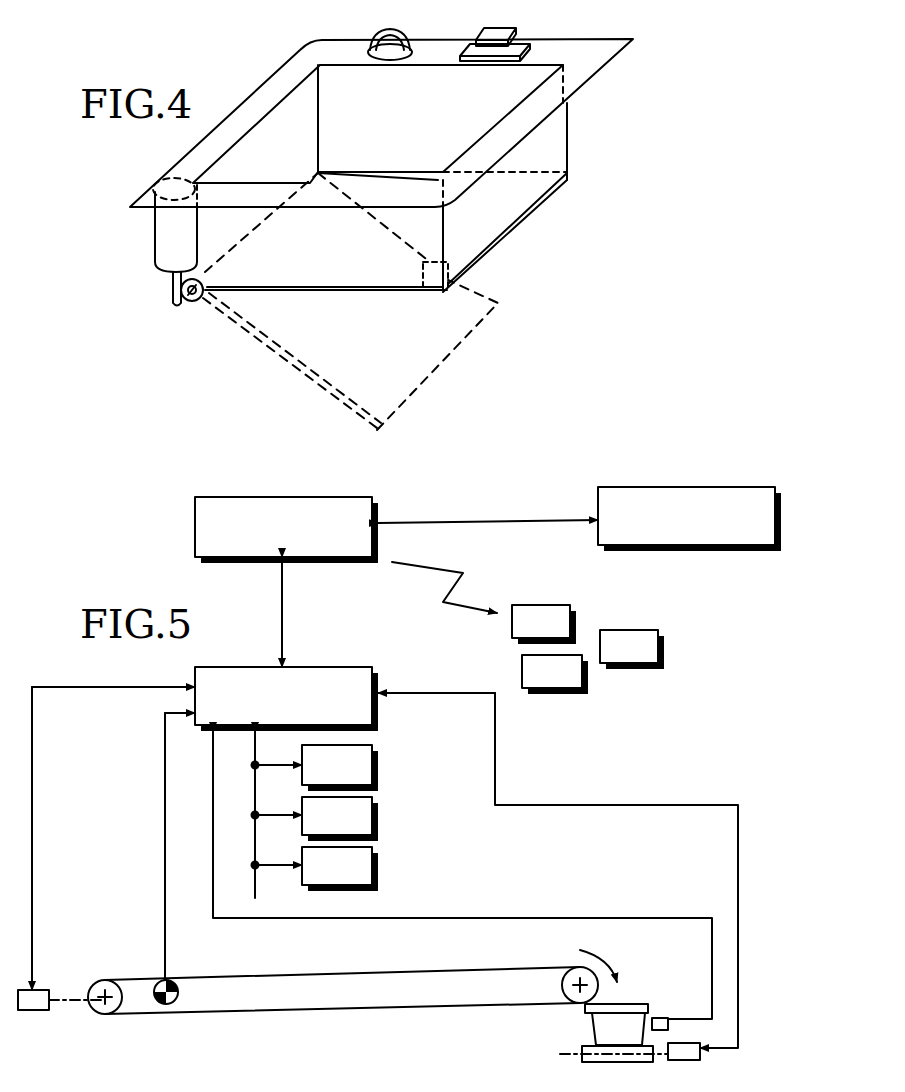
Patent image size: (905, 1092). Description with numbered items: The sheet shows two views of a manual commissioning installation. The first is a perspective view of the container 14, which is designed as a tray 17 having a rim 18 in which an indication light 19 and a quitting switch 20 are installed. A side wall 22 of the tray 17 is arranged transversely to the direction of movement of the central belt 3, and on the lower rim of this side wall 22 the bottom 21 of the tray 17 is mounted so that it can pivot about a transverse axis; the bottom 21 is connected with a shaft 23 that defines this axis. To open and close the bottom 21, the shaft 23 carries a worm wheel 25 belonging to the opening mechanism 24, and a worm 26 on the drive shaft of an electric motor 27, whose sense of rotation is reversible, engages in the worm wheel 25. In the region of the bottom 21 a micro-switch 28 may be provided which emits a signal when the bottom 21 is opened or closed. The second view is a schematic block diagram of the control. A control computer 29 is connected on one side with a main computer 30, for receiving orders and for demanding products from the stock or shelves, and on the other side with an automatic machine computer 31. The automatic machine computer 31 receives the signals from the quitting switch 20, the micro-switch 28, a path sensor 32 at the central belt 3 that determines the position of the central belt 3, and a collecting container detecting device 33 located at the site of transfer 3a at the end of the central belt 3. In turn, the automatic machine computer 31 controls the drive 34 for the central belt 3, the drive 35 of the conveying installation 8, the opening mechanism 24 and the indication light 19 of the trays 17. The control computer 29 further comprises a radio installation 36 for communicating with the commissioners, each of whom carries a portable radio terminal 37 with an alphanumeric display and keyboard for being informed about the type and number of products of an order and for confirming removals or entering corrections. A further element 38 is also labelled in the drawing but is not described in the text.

In FIG. 5, the central belt 3 is at (445, 1005).
In FIG. 5, the site of transfer 3a is at (578, 1010).
In FIG. 5, the conveying installation 8 is at (578, 1058).
In FIG. 4, the container 14 is at (236, 96).
In FIG. 5, the container 14 is at (351, 908).
In FIG. 4, the tray 17 is at (282, 72).
In FIG. 4, the rim 18 is at (578, 77).
In FIG. 4, the indication light 19 is at (385, 42).
In FIG. 5, the indication light 19 is at (340, 768).
In FIG. 4, the quitting switch 20 is at (498, 33).
In FIG. 5, the quitting switch 20 is at (340, 819).
In FIG. 4, the bottom 21 is at (520, 218).
In FIG. 4, the side wall 22 is at (236, 155).
In FIG. 4, the shaft 23 is at (260, 226).
In FIG. 4, the opening mechanism 24 is at (136, 328).
In FIG. 5, the opening mechanism 24 is at (340, 869).
In FIG. 4, the worm wheel 25 is at (188, 304).
In FIG. 4, the worm 26 is at (175, 300).
In FIG. 4, the electric motor 27 is at (162, 232).
In FIG. 4, the micro-switch 28 is at (436, 276).
In FIG. 5, the control computer 29 is at (226, 530).
In FIG. 5, the main computer 30 is at (613, 510).
In FIG. 5, the automatic machine computer 31 is at (258, 682).
In FIG. 5, the path sensor 32 is at (160, 985).
In FIG. 5, the collecting container detecting device 33 is at (658, 1015).
In FIG. 5, the drive 34 is at (37, 997).
In FIG. 5, the drive 35 is at (688, 1055).
In FIG. 5, the radio installation 36 is at (210, 527).
In FIG. 5, the portable radio terminal 37 is at (527, 614).
In FIG. 5, the article 38 is at (100, 1091).